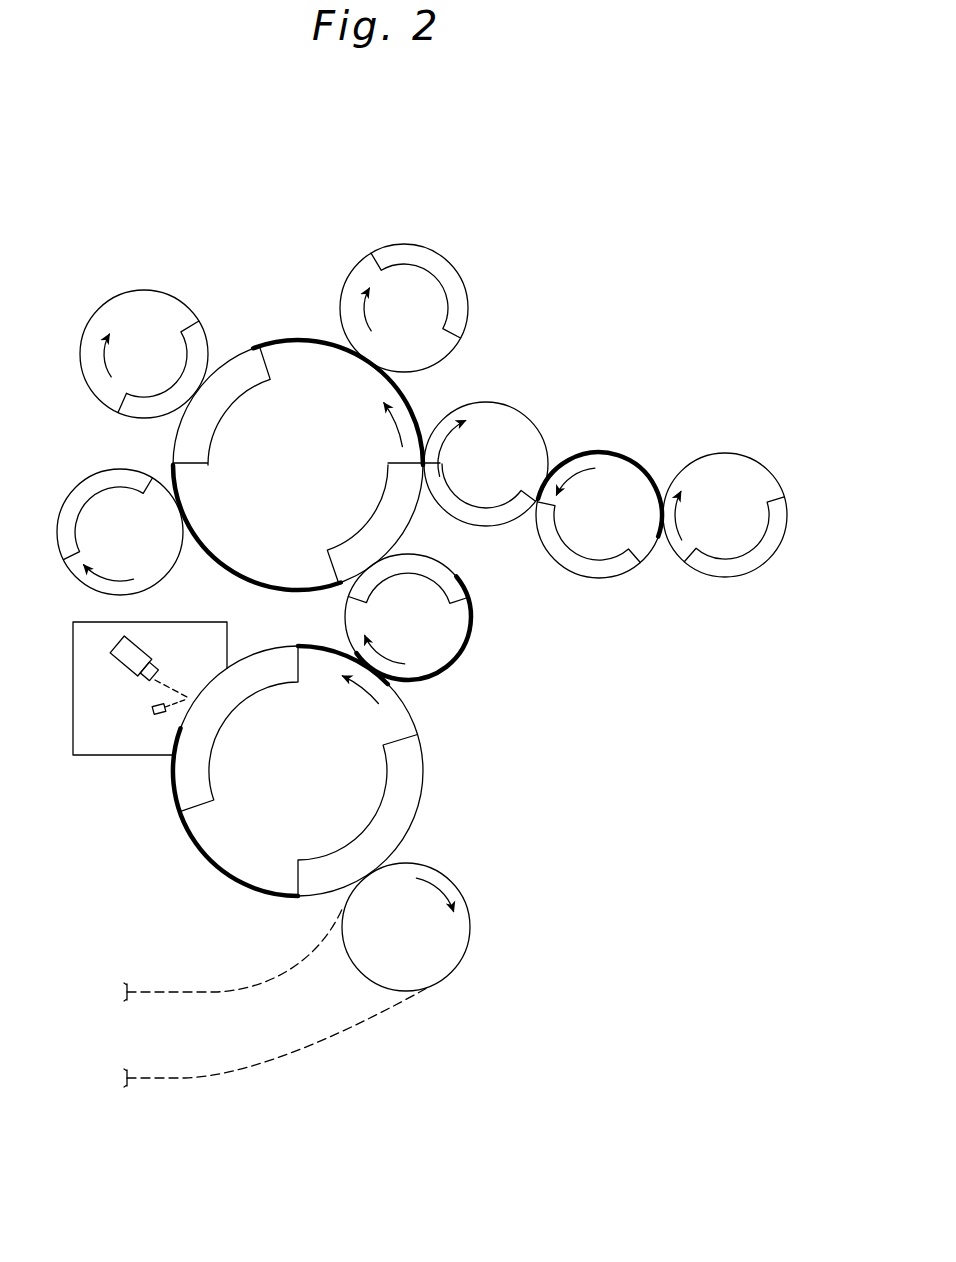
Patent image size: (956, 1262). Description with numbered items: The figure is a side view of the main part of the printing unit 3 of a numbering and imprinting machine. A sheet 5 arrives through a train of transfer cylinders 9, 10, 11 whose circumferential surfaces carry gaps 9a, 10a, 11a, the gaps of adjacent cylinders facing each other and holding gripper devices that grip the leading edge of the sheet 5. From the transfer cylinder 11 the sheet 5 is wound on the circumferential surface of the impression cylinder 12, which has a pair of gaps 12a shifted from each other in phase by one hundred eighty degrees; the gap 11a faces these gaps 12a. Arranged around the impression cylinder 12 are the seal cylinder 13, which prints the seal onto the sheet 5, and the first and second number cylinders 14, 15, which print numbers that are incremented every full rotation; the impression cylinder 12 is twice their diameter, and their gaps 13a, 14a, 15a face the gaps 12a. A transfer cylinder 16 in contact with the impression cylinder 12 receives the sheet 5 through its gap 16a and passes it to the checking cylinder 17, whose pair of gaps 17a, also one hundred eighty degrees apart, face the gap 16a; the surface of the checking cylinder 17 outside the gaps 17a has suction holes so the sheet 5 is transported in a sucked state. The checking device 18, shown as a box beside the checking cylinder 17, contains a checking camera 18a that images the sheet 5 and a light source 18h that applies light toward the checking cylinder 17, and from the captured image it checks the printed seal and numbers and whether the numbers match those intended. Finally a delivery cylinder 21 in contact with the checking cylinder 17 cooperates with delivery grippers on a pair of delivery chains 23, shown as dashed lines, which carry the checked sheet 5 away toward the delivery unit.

The printing unit 3 is at (503, 166).
The sheet 5 is at (410, 403).
The transfer cylinder 9 is at (722, 452).
The gap 9a is at (733, 568).
The transfer cylinder 10 is at (657, 553).
The gap 10a is at (593, 573).
The transfer cylinder 11 is at (503, 404).
The gap 11a is at (503, 517).
The impression cylinder 12 is at (300, 360).
The gap 12a is at (236, 373).
The seal cylinder 13 is at (346, 268).
The gap 13a is at (437, 263).
The first number cylinder 14 is at (142, 290).
The gap 14a is at (198, 340).
The second number cylinder 15 is at (73, 577).
The gap 15a is at (82, 495).
The transfer cylinder 16 is at (345, 622).
The gap 16a is at (463, 597).
The checking cylinder 17 is at (420, 738).
The gap 17a is at (250, 672).
The checking device 18 is at (122, 698).
The checking camera 18a is at (140, 647).
The light source 18h is at (158, 716).
The delivery cylinder 21 is at (470, 925).
The delivery chains 23 is at (303, 1043).